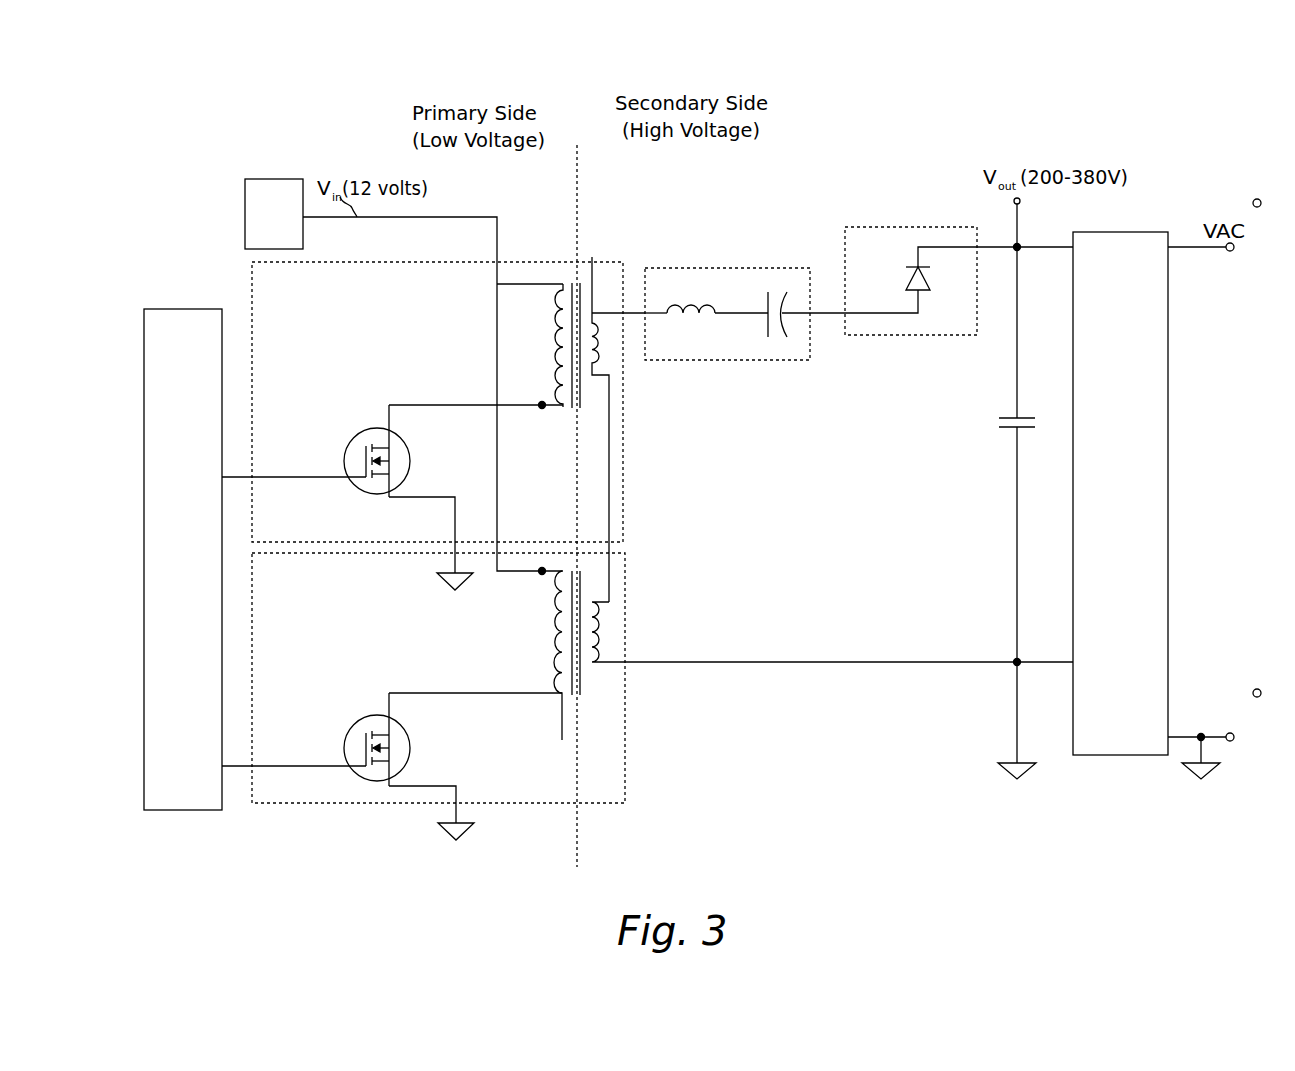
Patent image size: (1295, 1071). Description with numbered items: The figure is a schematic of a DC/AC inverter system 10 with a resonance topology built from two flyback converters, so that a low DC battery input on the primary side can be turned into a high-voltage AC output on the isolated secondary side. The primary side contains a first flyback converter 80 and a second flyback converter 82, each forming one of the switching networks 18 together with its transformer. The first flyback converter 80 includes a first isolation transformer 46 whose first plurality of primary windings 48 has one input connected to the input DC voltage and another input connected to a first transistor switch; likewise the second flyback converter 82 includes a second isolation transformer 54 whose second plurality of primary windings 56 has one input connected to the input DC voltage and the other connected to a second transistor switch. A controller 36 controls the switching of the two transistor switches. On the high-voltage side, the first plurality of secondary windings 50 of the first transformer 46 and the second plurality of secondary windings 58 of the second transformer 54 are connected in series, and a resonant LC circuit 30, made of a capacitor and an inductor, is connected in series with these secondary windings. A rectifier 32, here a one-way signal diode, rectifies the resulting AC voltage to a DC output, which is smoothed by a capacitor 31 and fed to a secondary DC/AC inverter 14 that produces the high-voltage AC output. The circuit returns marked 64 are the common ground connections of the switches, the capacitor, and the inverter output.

The DC/AC inverter system 10 is at (1013, 92).
The switching networks 18 is at (288, 224).
The first flyback converter 80 is at (248, 288).
The second flyback converter 82 is at (293, 803).
The controller 36 is at (193, 493).
The first plurality of primary windings 48 is at (566, 262).
The first plurality of secondary windings 50 is at (592, 257).
The first isolation transformer 46 is at (577, 352).
The second plurality of primary windings 56 is at (562, 740).
The second plurality of secondary windings 58 is at (592, 635).
The second isolation transformer 54 is at (577, 660).
The resonant LC circuit 30 is at (705, 268).
The rectifier 32 is at (890, 227).
The capacitor 31 is at (1025, 417).
The secondary DC/AC inverter 14 is at (1125, 384).
The ground 64 is at (460, 585).